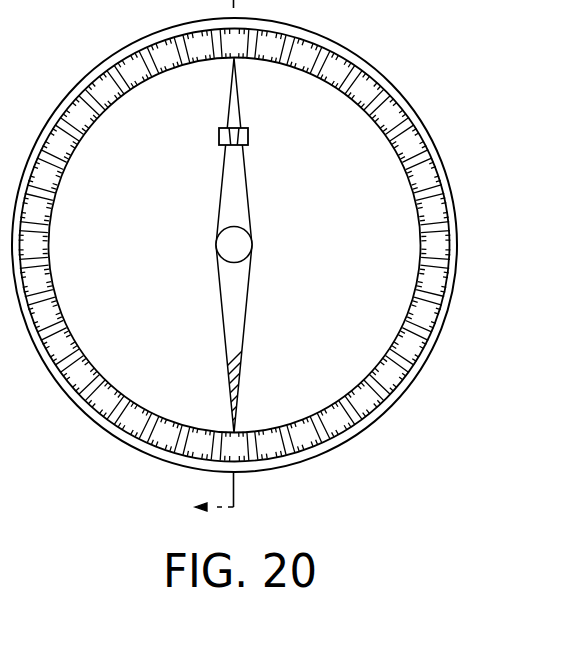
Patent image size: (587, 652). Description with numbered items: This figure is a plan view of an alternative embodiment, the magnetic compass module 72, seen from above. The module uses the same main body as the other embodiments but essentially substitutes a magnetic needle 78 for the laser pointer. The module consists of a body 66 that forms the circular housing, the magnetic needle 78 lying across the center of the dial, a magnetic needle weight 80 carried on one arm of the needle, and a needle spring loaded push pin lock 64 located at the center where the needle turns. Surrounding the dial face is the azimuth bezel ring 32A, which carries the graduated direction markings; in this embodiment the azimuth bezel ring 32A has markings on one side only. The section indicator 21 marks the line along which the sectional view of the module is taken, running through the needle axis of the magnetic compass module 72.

The housing 66 is at (373, 422).
The graduated compass ring 32A is at (415, 202).
The dial face 72 is at (135, 328).
The needle 78 is at (247, 190).
The pivot 64 is at (252, 248).
The indicator 80 is at (248, 136).
The section line 21 is at (197, 262).